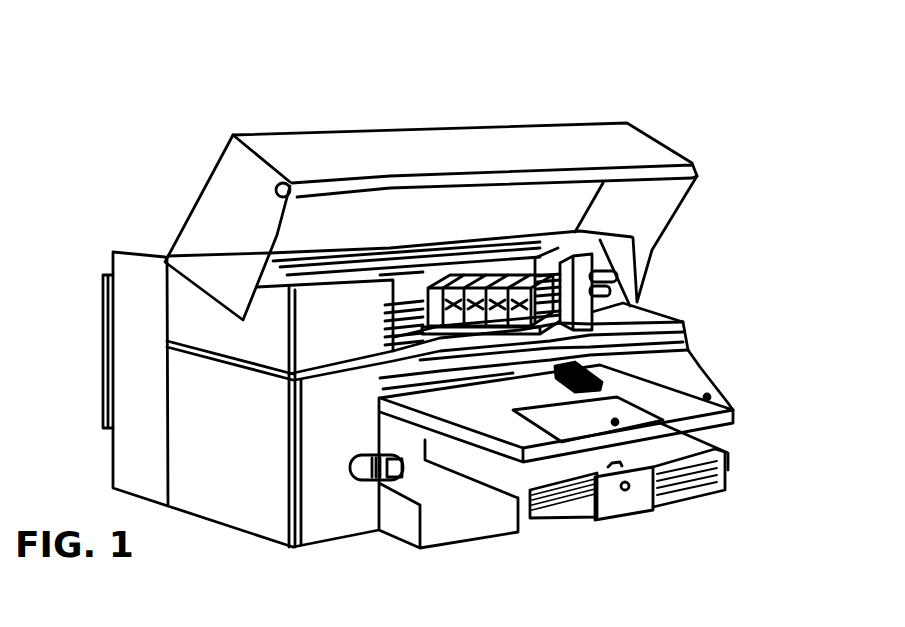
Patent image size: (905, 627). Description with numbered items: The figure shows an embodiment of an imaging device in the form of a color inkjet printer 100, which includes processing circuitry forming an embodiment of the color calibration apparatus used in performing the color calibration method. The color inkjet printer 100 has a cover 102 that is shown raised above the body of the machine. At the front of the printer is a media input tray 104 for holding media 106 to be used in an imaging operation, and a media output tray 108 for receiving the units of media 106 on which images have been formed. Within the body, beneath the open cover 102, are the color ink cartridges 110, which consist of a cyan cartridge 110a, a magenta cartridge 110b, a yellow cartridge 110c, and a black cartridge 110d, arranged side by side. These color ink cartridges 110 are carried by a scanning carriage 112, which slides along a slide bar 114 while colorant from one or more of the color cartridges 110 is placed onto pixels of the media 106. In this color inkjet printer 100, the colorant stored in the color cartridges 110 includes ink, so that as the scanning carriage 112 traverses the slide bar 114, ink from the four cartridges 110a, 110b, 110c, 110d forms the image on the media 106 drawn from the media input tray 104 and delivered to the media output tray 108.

The color inkjet printer 100 is at (553, 105).
The cover 102 is at (218, 160).
The media input tray 104 is at (558, 518).
The media 106 is at (715, 470).
The media output tray 108 is at (706, 398).
The color ink cartridges 110 is at (445, 270).
The cyan cartridge 110a is at (430, 298).
The magenta cartridge 110b is at (458, 275).
The yellow cartridge 110c is at (472, 272).
The black cartridge 110d is at (533, 265).
The scanning carriage 112 is at (388, 337).
The slide bar 114 is at (606, 300).